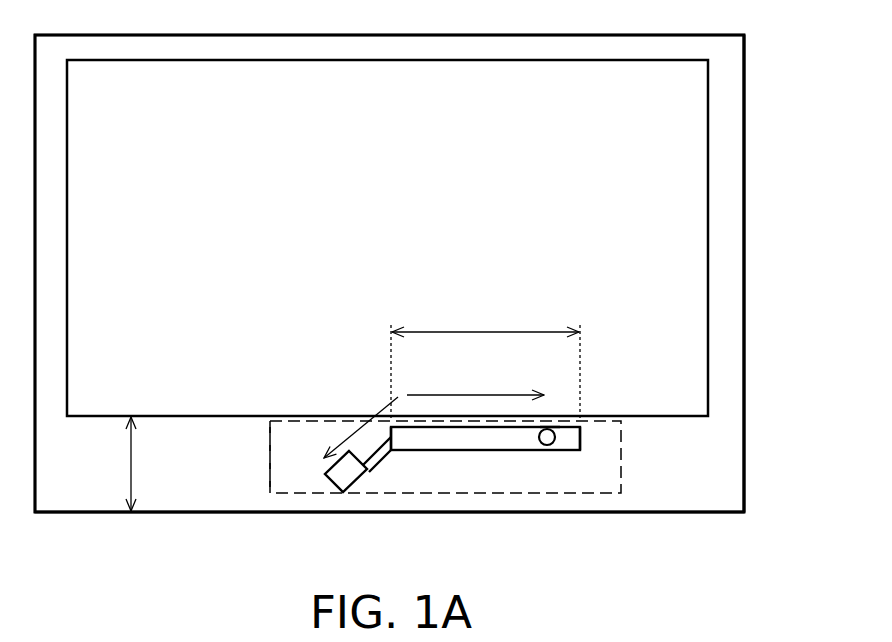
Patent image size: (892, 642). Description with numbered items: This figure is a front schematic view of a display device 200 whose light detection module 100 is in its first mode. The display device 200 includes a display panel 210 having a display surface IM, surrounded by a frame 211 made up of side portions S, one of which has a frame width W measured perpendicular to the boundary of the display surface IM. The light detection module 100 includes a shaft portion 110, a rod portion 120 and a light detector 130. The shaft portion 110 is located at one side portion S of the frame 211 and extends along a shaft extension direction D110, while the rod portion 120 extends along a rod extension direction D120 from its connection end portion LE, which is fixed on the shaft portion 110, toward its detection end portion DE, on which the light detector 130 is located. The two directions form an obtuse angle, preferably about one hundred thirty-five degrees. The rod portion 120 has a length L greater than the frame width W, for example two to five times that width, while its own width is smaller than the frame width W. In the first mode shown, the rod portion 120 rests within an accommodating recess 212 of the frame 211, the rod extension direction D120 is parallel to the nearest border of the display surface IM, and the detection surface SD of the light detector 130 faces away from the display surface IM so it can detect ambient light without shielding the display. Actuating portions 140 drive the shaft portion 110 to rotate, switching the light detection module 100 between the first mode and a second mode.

The light detection module 100 is at (640, 472).
The shaft portion 110 is at (380, 451).
The rod portion 120 is at (472, 441).
The light detector 130 is at (547, 446).
The actuating portions 140 is at (351, 493).
The display device 200 is at (841, 575).
The display panel 210 is at (772, 55).
The frame 211 is at (737, 197).
The accommodating recess 212 is at (270, 468).
The display surface IM is at (655, 119).
The detection end portion DE is at (584, 437).
The side portion S is at (184, 510).
The frame width W is at (118, 464).
The length of the rod portion L is at (485, 360).
The shaft extension direction D110 is at (361, 417).
The rod extension direction D120 is at (475, 377).
The detection surface SD is at (553, 424).
The connection end portion LE is at (386, 433).